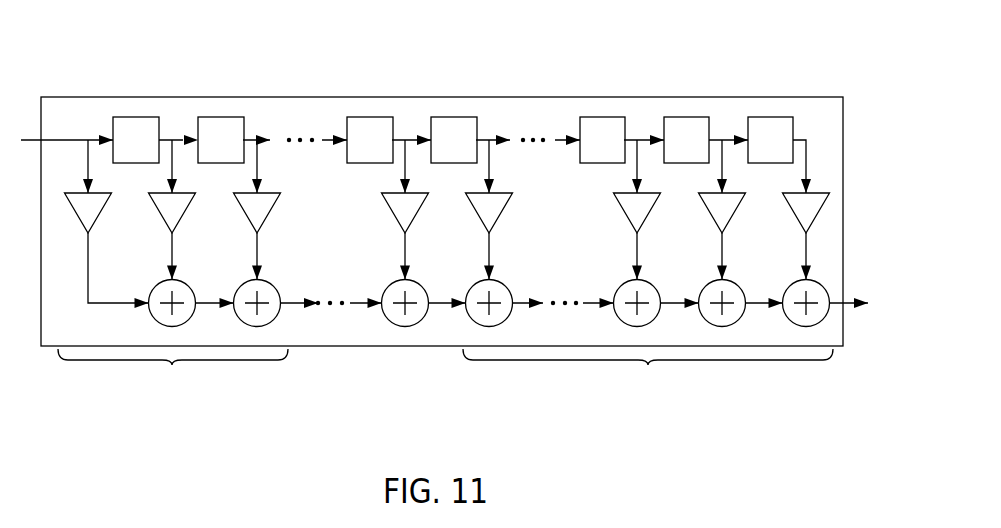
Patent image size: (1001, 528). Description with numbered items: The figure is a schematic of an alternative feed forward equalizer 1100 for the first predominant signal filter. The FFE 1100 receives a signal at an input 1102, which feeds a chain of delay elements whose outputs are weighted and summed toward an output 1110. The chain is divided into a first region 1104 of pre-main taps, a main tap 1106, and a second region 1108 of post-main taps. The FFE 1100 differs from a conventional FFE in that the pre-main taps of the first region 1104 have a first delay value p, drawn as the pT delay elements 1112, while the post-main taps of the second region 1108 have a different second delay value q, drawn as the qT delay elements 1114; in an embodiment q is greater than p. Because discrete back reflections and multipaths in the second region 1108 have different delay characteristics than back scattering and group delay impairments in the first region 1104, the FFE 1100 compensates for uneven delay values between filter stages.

The feed forward equalizer 1100 is at (768, 42).
The input 1102 is at (23, 138).
The first region of pre-main taps 1104 is at (150, 449).
The main tap 1106 is at (405, 326).
The second region of post-main taps 1108 is at (626, 449).
The output 1110 is at (862, 306).
The pT delay elements 1112 is at (143, 117).
The qT delay elements 1114 is at (462, 117).